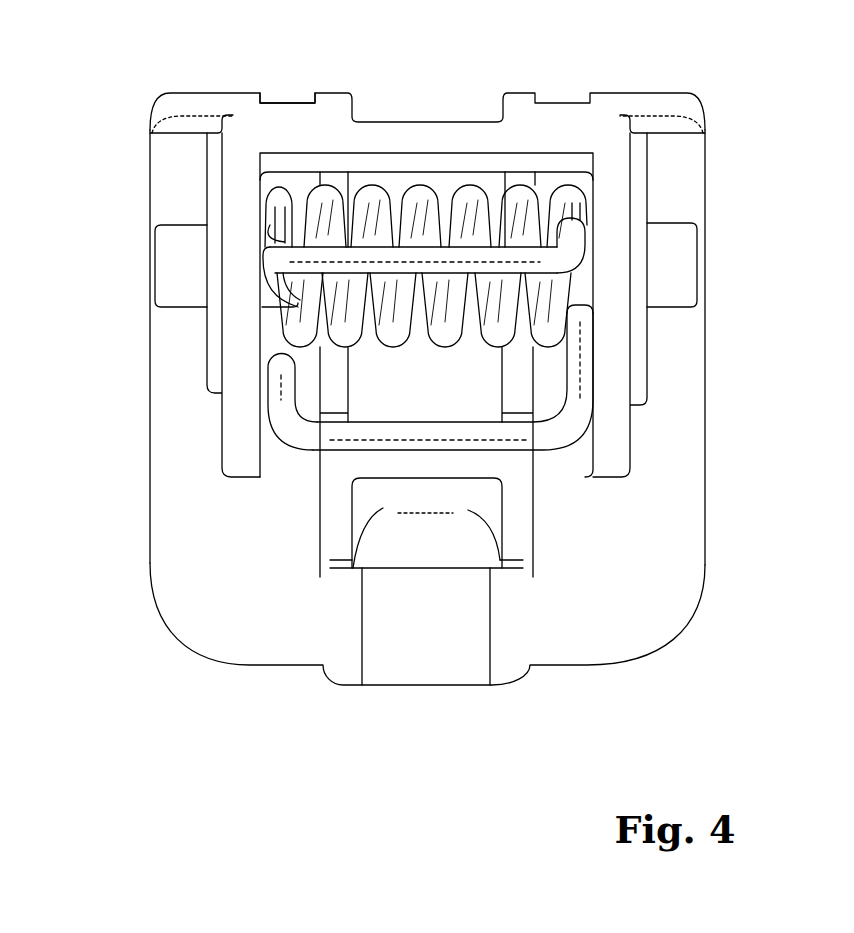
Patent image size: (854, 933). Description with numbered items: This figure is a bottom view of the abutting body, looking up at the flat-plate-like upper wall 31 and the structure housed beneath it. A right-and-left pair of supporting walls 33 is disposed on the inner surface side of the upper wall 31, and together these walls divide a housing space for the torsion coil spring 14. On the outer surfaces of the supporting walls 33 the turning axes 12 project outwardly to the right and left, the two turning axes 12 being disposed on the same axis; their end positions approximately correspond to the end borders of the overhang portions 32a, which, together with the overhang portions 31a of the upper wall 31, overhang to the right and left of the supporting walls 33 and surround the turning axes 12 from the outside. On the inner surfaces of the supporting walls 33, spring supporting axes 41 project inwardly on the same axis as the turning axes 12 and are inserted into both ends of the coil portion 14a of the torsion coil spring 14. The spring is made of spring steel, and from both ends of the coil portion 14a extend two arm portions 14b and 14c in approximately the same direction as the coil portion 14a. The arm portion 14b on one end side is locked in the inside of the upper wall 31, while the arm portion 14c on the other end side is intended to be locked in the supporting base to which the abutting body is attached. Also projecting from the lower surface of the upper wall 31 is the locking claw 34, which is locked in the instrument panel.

The upper wall 31 is at (583, 666).
The overhang portion 31a is at (175, 463).
The overhang portion 32a is at (310, 95).
The supporting wall 33 is at (238, 358).
The turning axis 12 is at (182, 257).
The locking claw 34 is at (428, 537).
The torsion coil spring 14 is at (499, 376).
The coil portion 14a is at (414, 195).
The arm portion 14b is at (303, 437).
The arm portion 14c is at (517, 257).
The spring supporting axis 41 is at (433, 152).